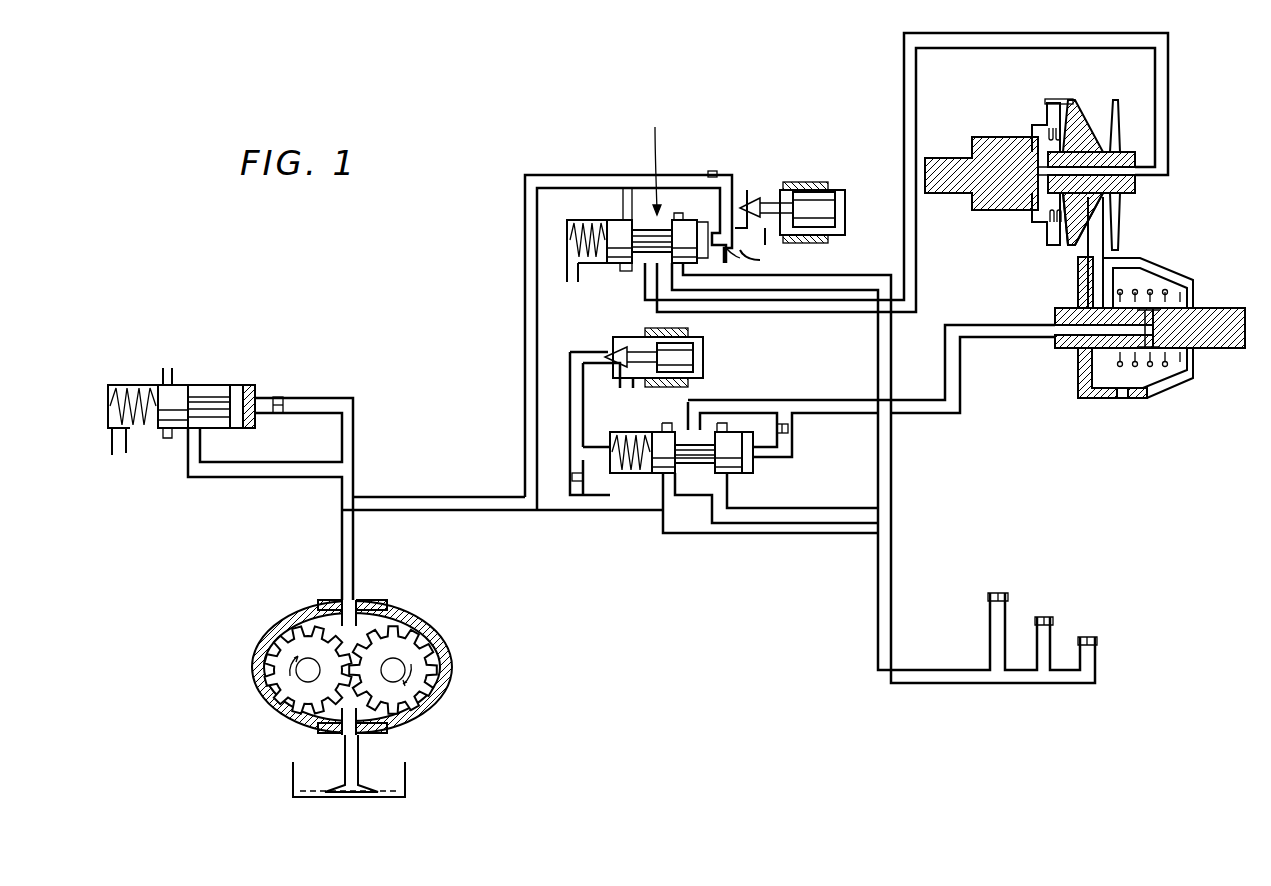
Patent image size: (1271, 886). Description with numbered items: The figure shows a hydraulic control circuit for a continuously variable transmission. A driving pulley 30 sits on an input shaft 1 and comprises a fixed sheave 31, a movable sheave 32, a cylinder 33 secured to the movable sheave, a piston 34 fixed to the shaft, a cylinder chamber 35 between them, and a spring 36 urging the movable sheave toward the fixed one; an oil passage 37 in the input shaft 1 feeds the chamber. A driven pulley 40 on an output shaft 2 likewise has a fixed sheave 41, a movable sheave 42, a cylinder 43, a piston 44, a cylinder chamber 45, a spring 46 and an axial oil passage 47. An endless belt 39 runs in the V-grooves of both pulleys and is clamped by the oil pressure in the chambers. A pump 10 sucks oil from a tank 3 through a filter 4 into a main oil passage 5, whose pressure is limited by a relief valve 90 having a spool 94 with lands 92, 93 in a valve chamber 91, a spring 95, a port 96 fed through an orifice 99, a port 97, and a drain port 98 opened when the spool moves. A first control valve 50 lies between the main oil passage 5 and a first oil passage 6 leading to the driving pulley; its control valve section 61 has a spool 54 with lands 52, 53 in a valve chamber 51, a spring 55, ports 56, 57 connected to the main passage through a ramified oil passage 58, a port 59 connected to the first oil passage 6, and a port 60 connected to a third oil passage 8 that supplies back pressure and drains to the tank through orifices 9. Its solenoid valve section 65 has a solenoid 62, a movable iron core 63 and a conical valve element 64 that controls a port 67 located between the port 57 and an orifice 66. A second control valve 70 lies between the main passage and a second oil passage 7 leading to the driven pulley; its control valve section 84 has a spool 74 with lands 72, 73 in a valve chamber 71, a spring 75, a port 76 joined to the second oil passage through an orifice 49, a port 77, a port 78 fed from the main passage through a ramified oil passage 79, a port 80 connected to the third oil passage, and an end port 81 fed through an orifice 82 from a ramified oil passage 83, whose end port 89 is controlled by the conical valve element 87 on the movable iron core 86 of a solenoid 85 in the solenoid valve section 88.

The input shaft 1 is at (985, 140).
The output shaft 2 is at (1210, 308).
The tank 3 is at (408, 782).
The filter 4 is at (366, 786).
The main oil passage 5 is at (415, 500).
The first oil passage 6 is at (902, 110).
The second oil passage 7 is at (953, 325).
The third oil passage 8 is at (893, 488).
The orifices 9 is at (998, 593).
The pump 10 is at (458, 663).
The driving pulley 30 is at (1132, 93).
The fixed member or sheave 31 is at (1122, 128).
The movable member or sheave 32 is at (1085, 130).
The cylinder 33 is at (1050, 98).
The piston 34 is at (1045, 120).
The cylinder chamber 35 is at (1057, 125).
The spring 36 is at (1045, 225).
The oil passage 37 is at (1140, 153).
The endless belt 39 is at (1105, 222).
The driven pulley 40 is at (1194, 382).
The fixed member or sheave 41 is at (1078, 290).
The movable member or sheave 42 is at (1103, 400).
The cylinder 43 is at (1137, 400).
The piston 44 is at (1165, 280).
The cylinder chamber 45 is at (1125, 258).
The spring 46 is at (1150, 380).
The oil passage 47 is at (1055, 345).
The orifice 49 is at (790, 429).
The first control valve 50 is at (745, 168).
The cylindrical valve chamber 51 is at (676, 225).
The land 52 is at (690, 225).
The land 53 is at (618, 220).
The spool 54 is at (650, 232).
The spring 55 is at (570, 245).
The port 56 is at (735, 255).
The port 57 is at (624, 200).
The ramified oil passage 58 is at (552, 172).
The port 59 is at (634, 268).
The port 60 is at (678, 268).
The control valve section 61 is at (653, 164).
The solenoid 62 is at (815, 185).
The movable iron core 63 is at (835, 195).
The conical valve element 64 is at (757, 200).
The solenoid valve section 65 is at (795, 180).
The orifice 66 is at (712, 172).
The port 67 is at (750, 232).
The second control valve 70 is at (764, 387).
The cylindrical valve chamber 71 is at (710, 470).
The land 72 is at (738, 458).
The land 73 is at (664, 462).
The spool 74 is at (690, 468).
The spring 75 is at (630, 465).
The port 76 is at (792, 458).
The port 77 is at (695, 425).
The port 78 is at (722, 480).
The ramified oil passage 79 is at (662, 505).
The port 80 is at (670, 500).
The port 81 is at (607, 452).
The orifice 82 is at (572, 480).
The ramified oil passage 83 is at (572, 375).
The control valve section 84 is at (756, 481).
The solenoid 85 is at (690, 330).
The movable iron core 86 is at (693, 365).
The conical valve element 87 is at (612, 362).
The solenoid valve section 88 is at (713, 351).
The port 89 is at (606, 356).
The relief valve 90 is at (271, 373).
The cylindrical valve chamber 91 is at (214, 388).
The land 92 is at (236, 388).
The land 93 is at (172, 415).
The spool 94 is at (200, 400).
The spring 95 is at (128, 420).
The port 96 is at (262, 410).
The port 97 is at (195, 435).
The port 98 is at (167, 370).
The orifice 99 is at (282, 397).